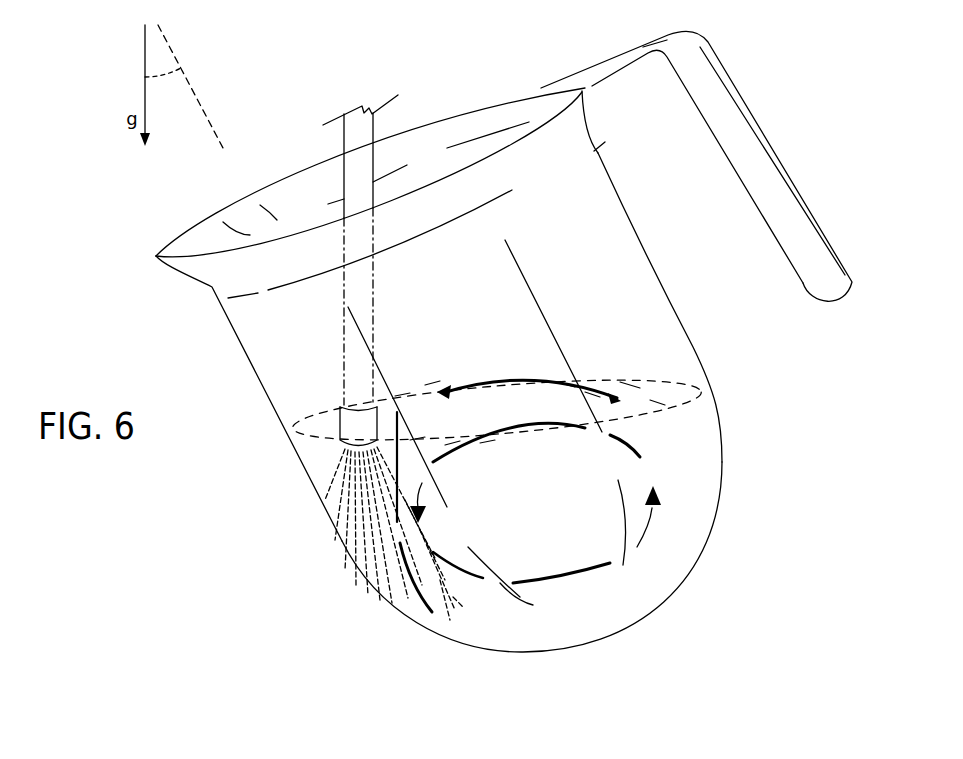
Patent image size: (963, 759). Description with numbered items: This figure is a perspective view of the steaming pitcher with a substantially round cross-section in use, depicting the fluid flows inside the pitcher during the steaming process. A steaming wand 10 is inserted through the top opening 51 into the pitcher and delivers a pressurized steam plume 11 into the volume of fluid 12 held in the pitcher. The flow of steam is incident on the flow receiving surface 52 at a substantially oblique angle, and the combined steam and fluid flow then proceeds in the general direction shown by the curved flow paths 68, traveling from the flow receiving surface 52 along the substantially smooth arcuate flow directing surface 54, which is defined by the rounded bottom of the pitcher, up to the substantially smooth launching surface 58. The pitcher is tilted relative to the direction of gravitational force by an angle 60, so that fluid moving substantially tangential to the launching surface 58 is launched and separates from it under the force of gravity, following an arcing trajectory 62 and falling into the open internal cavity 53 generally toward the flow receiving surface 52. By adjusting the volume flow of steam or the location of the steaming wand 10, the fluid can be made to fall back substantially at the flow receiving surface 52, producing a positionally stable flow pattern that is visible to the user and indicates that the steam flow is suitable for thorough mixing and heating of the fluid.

The steaming wand 10 is at (350, 154).
The steam plume 11 is at (365, 483).
The volume of fluid 12 is at (678, 422).
The top opening 51 is at (428, 165).
The flow receiving surface 52 is at (352, 558).
The open internal cavity 53 is at (453, 417).
The flow directing surface 54 is at (622, 628).
The launching surface 58 is at (712, 398).
The angle 60 is at (176, 93).
The arcing trajectory 62 is at (507, 378).
The curved flow paths 68 is at (597, 568).